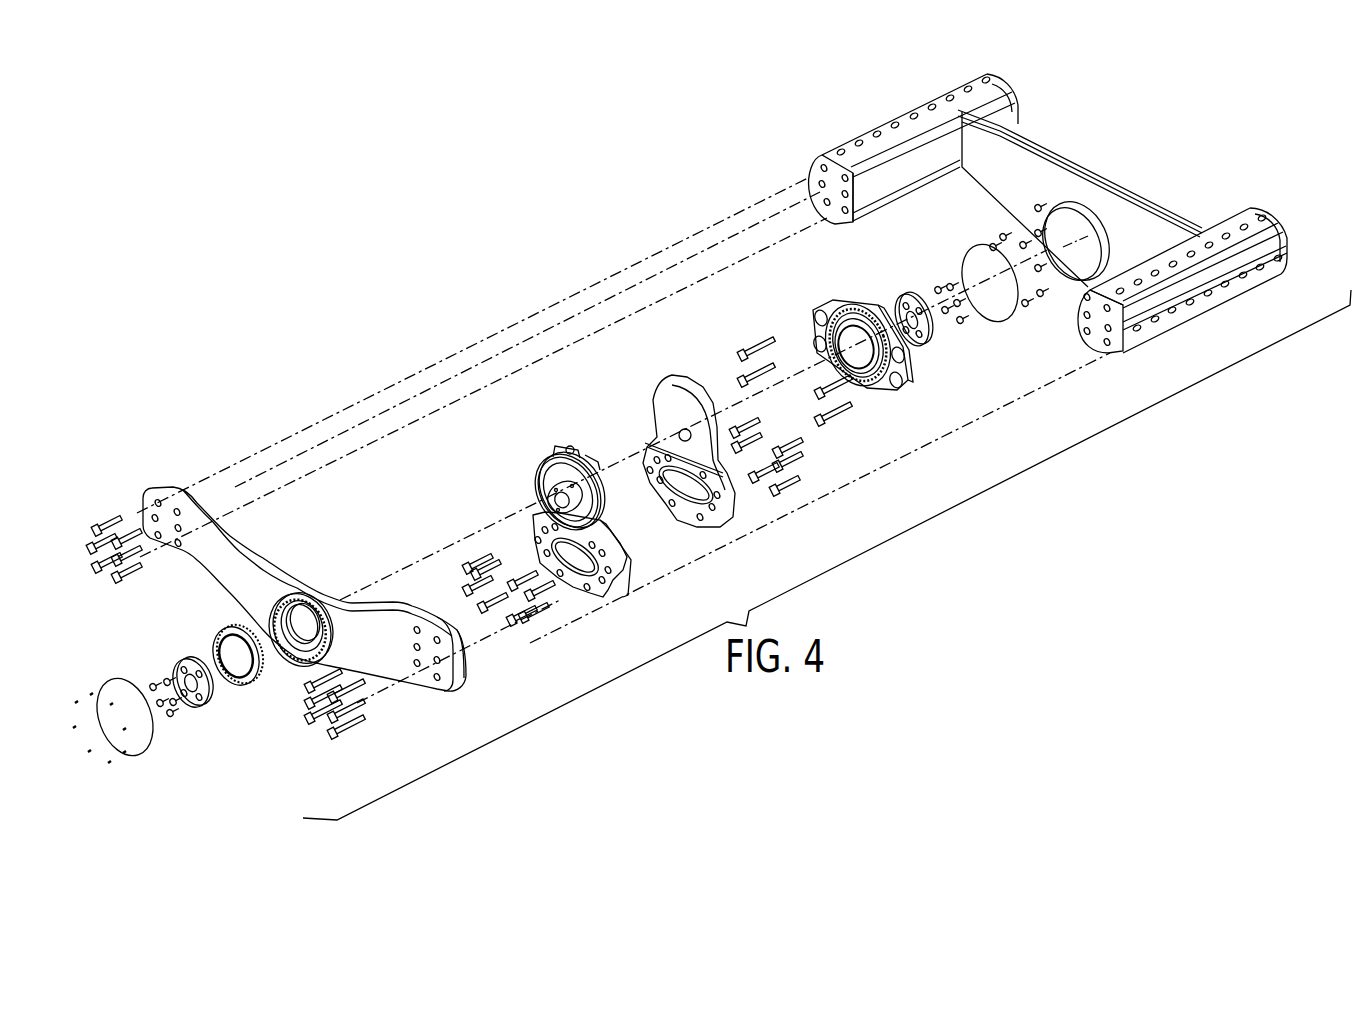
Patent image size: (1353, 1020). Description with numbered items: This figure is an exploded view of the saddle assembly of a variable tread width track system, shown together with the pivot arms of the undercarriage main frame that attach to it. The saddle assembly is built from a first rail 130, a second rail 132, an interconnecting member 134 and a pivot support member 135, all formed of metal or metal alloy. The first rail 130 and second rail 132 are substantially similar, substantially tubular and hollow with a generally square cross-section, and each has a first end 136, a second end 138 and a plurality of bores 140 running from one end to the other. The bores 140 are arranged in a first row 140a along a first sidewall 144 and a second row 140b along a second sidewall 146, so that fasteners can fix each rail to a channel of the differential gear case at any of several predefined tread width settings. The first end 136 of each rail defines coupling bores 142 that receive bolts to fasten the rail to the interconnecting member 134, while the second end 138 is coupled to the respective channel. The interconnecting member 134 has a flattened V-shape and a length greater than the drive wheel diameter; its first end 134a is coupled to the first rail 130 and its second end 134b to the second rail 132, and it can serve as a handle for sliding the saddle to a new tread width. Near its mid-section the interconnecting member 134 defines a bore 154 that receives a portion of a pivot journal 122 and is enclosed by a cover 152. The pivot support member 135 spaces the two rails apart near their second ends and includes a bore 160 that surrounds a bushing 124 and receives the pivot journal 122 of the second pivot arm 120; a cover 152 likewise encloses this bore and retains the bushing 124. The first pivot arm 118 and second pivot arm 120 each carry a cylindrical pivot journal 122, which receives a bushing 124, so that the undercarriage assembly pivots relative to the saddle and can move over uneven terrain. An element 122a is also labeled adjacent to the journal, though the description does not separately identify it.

The first pivot arm 118 is at (553, 440).
The second pivot arm 120 is at (668, 367).
The pivot journal 122 is at (553, 500).
The flange plate 122a is at (613, 538).
The bushing 124 is at (253, 670).
The first rail 130 is at (892, 108).
The second rail 132 is at (1222, 313).
The interconnecting member 134 is at (146, 490).
The first end 134a is at (172, 507).
The second end 134b is at (440, 687).
The pivot support member 135 is at (1112, 160).
The first end 136 is at (810, 160).
The second end 138 is at (1000, 80).
The plurality of bores 140 is at (965, 77).
The first row 140a is at (1272, 208).
The second row 140b is at (858, 135).
The coupling bores 142 is at (844, 213).
The first sidewall 144 is at (937, 105).
The second sidewall 146 is at (1160, 317).
The cover 152 is at (140, 747).
The bore 154 is at (297, 612).
The bore 160 is at (873, 383).